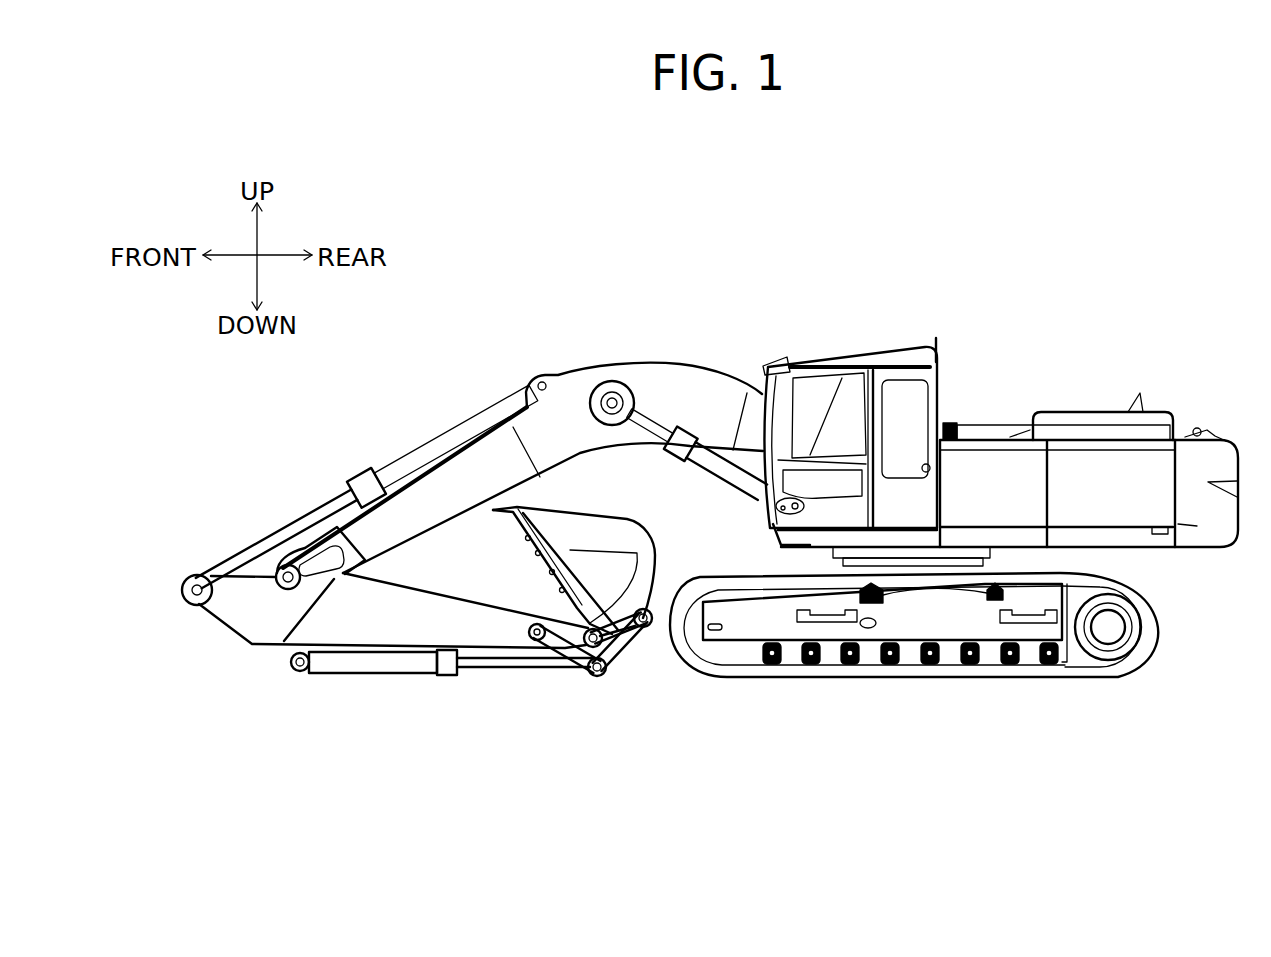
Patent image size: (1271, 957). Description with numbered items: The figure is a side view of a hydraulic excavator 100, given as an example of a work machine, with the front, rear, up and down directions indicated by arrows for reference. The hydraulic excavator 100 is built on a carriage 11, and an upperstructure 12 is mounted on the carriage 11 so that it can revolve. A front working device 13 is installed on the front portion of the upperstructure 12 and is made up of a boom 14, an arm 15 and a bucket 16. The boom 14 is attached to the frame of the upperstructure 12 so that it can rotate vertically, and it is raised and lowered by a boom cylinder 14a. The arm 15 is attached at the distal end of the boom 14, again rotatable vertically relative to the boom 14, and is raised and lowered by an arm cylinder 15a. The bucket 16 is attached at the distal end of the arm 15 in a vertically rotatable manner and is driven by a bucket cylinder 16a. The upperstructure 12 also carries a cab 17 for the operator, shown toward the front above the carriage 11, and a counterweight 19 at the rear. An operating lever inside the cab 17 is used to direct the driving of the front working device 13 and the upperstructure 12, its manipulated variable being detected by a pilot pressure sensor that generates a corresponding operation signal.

The hydraulic excavator 100 is at (1196, 382).
The carriage 11 is at (807, 697).
The upperstructure 12 is at (984, 383).
The front working device 13 is at (488, 334).
The boom 14 is at (676, 383).
The boom cylinder 14a is at (718, 463).
The arm 15 is at (368, 623).
The arm cylinder 15a is at (408, 463).
The bucket 16 is at (615, 585).
The bucket cylinder 16a is at (407, 660).
The cab 17 is at (858, 368).
The counterweight 19 is at (1212, 528).